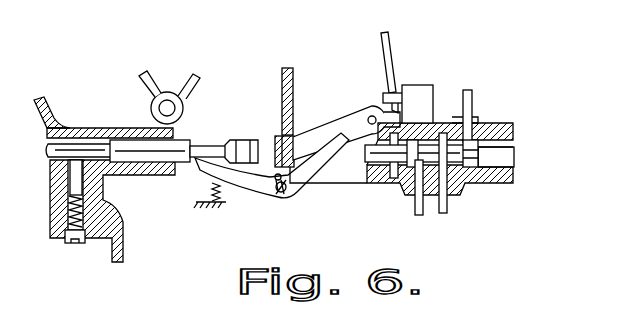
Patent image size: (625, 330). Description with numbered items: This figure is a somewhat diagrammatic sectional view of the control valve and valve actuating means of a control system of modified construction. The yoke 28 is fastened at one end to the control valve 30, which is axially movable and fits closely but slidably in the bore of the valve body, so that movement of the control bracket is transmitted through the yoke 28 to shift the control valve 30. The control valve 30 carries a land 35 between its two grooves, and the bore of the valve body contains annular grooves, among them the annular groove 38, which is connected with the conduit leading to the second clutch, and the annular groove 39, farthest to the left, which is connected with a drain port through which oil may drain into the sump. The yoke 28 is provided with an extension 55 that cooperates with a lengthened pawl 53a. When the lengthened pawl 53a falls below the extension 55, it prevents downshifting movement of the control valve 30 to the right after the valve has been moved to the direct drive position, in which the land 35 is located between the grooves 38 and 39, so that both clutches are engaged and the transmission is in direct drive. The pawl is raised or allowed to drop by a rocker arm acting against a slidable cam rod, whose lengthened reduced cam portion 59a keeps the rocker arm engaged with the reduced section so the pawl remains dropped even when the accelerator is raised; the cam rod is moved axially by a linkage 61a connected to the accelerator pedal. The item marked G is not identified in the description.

The yoke 28 is at (296, 70).
The extension 55 is at (286, 140).
The reduced cam portion 59a is at (221, 128).
The linkage 61a is at (250, 163).
The lengthened pawl 53a is at (332, 122).
The annular groove 39 is at (398, 133).
The land 35 is at (416, 132).
The annular groove 38 is at (438, 100).
The control valve 30 is at (487, 155).
The gauge / indicator G is at (193, 95).